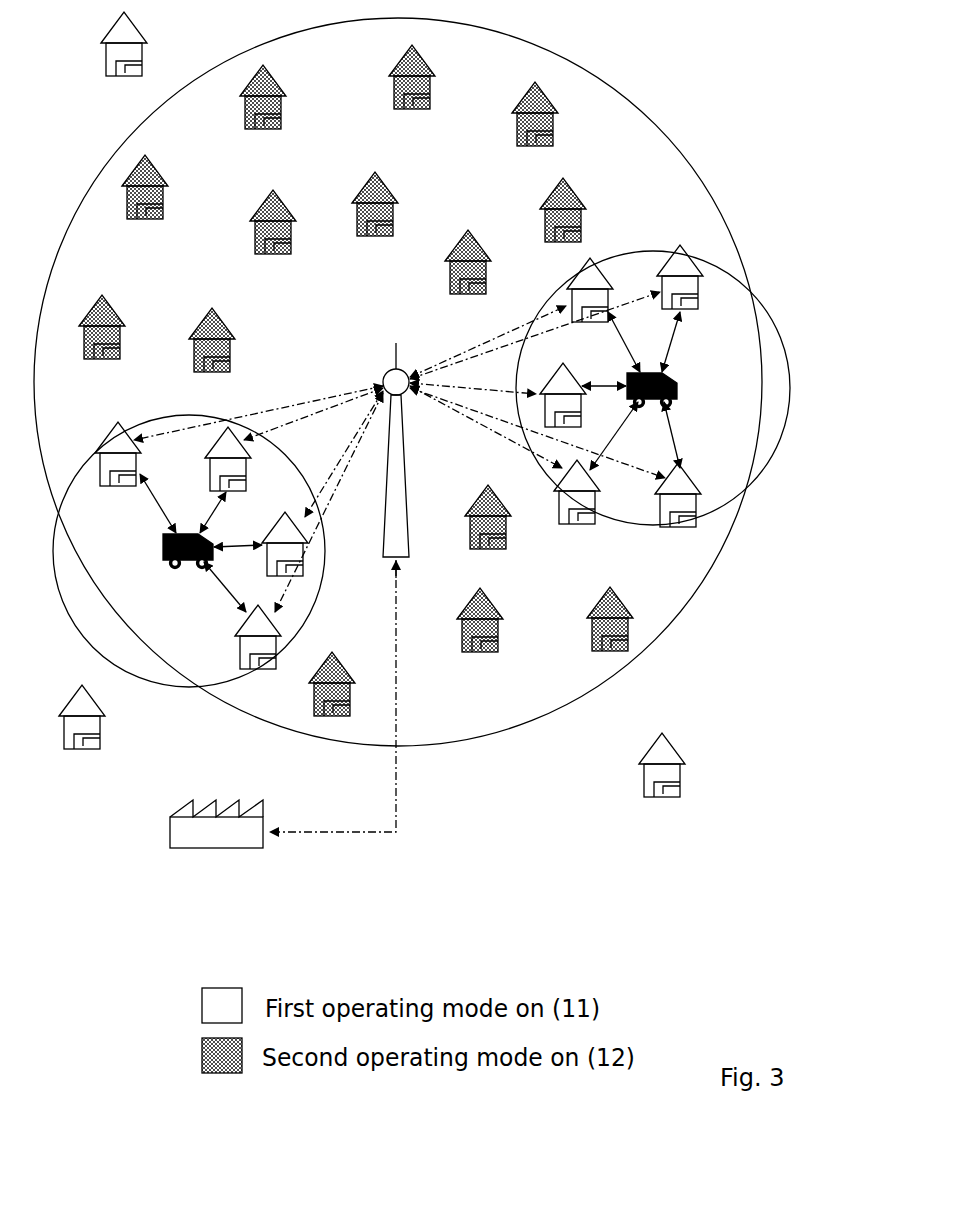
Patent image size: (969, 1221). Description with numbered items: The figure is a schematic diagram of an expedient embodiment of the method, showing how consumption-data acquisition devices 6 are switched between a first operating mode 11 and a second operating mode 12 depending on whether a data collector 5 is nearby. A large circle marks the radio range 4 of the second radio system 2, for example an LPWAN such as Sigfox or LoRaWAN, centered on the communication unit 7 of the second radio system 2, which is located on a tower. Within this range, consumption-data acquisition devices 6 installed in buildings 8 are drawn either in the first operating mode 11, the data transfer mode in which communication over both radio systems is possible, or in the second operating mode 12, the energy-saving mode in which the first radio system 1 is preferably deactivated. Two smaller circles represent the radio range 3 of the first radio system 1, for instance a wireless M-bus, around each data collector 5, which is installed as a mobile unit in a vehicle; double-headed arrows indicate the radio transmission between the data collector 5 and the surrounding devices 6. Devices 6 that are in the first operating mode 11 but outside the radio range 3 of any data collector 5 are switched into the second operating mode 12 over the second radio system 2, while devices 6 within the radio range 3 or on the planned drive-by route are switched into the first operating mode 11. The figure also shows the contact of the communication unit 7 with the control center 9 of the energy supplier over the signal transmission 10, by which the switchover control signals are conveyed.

The first radio system 1 is at (668, 432).
The second radio system 2 is at (462, 360).
The radio range of the first radio system 3 is at (713, 263).
The radio range of the second radio system 4 is at (633, 107).
The data collector 5 is at (672, 378).
The consumption-data acquisition device 6 is at (676, 528).
The communication unit of the second radio system 7 is at (383, 386).
The building 8 is at (560, 194).
The control center 9 is at (170, 832).
The signal transmission 10 is at (397, 813).
The first operating mode 11 is at (682, 265).
The second operating mode 12 is at (545, 204).